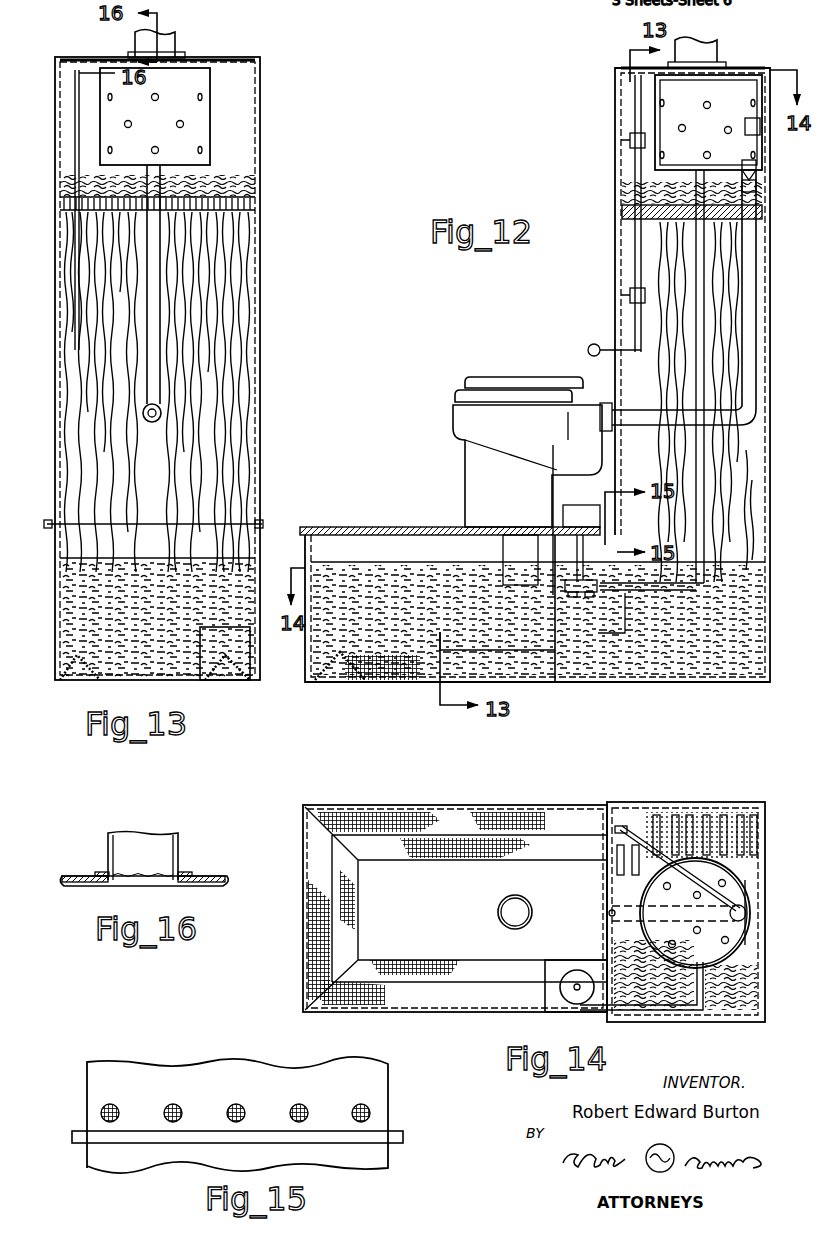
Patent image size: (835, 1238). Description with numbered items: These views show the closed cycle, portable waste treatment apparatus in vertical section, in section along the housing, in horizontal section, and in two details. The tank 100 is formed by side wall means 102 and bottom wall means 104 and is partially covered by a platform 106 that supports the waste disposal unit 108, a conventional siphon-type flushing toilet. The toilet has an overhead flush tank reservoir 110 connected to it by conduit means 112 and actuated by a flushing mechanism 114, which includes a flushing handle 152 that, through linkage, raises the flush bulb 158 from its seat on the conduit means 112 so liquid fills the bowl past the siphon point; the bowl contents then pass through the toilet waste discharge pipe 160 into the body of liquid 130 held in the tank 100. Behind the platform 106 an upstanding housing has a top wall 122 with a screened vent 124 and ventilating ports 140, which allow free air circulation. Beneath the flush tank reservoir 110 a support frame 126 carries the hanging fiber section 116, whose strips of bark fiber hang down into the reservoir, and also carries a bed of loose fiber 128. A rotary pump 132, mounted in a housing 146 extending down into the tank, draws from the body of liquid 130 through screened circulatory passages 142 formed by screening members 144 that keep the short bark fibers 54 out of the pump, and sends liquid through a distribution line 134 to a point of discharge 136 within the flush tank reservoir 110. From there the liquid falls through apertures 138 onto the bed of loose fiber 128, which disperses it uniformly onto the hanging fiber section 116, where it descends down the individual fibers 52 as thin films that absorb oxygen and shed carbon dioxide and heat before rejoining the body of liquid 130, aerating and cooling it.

In FIG. 12, the individual fibers 52 is at (761, 367).
In FIG. 14, the individual fibers 52 is at (745, 832).
In FIG. 13, the short bark fibers 54 is at (75, 637).
In FIG. 12, the short bark fibers 54 is at (748, 610).
In FIG. 12, the tank 100 is at (559, 400).
In FIG. 14, the tank 100 is at (431, 908).
In FIG. 13, the side wall means 102 is at (55, 595).
In FIG. 12, the side wall means 102 is at (762, 655).
In FIG. 14, the side wall means 102 is at (305, 930).
In FIG. 15, the side wall means 102 is at (388, 1160).
In FIG. 13, the bottom wall means 104 is at (197, 678).
In FIG. 12, the bottom wall means 104 is at (570, 682).
In FIG. 12, the platform 106 is at (388, 525).
In FIG. 15, the platform 106 is at (72, 1132).
In FIG. 12, the waste disposal unit 108 is at (465, 419).
In FIG. 13, the flush tank reservoir 110 is at (210, 128).
In FIG. 12, the flush tank reservoir 110 is at (655, 110).
In FIG. 14, the flush tank reservoir 110 is at (745, 878).
In FIG. 13, the conduit means 112 is at (147, 362).
In FIG. 12, the conduit means 112 is at (750, 330).
In FIG. 14, the conduit means 112 is at (622, 905).
In FIG. 12, the flushing mechanism 114 is at (635, 252).
In FIG. 12, the hanging fiber section 116 is at (740, 295).
In FIG. 13, the top wall 122 is at (215, 62).
In FIG. 12, the top wall 122 is at (732, 62).
In FIG. 16, the top wall 122 is at (84, 875).
In FIG. 13, the vent 124 is at (175, 37).
In FIG. 12, the vent 124 is at (696, 49).
In FIG. 16, the vent 124 is at (178, 858).
In FIG. 13, the support frame 126 is at (247, 204).
In FIG. 12, the support frame 126 is at (620, 208).
In FIG. 14, the support frame 126 is at (703, 830).
In FIG. 13, the bed of loose fiber 128 is at (227, 179).
In FIG. 12, the bed of loose fiber 128 is at (660, 195).
In FIG. 14, the bed of loose fiber 128 is at (715, 1005).
In FIG. 12, the body of liquid 130 is at (700, 668).
In FIG. 12, the rotary pump 132 is at (572, 512).
In FIG. 13, the distribution line 134 is at (250, 362).
In FIG. 12, the distribution line 134 is at (705, 478).
In FIG. 12, the point of discharge 136 is at (652, 380).
In FIG. 14, the point of discharge 136 is at (708, 965).
In FIG. 13, the apertures 138 is at (184, 124).
In FIG. 12, the apertures 138 is at (710, 108).
In FIG. 14, the apertures 138 is at (667, 890).
In FIG. 15, the ventilating ports 140 is at (170, 1105).
In FIG. 13, the screened circulatory passages 142 is at (75, 675).
In FIG. 12, the screened circulatory passages 142 is at (342, 670).
In FIG. 14, the screening members 144 is at (415, 815).
In FIG. 12, the housing 146 is at (615, 663).
In FIG. 14, the housing 146 is at (600, 960).
In FIG. 12, the flushing handle 152 is at (595, 343).
In FIG. 12, the flush bulb 158 is at (758, 172).
In FIG. 12, the toilet waste discharge pipe 160 is at (512, 548).